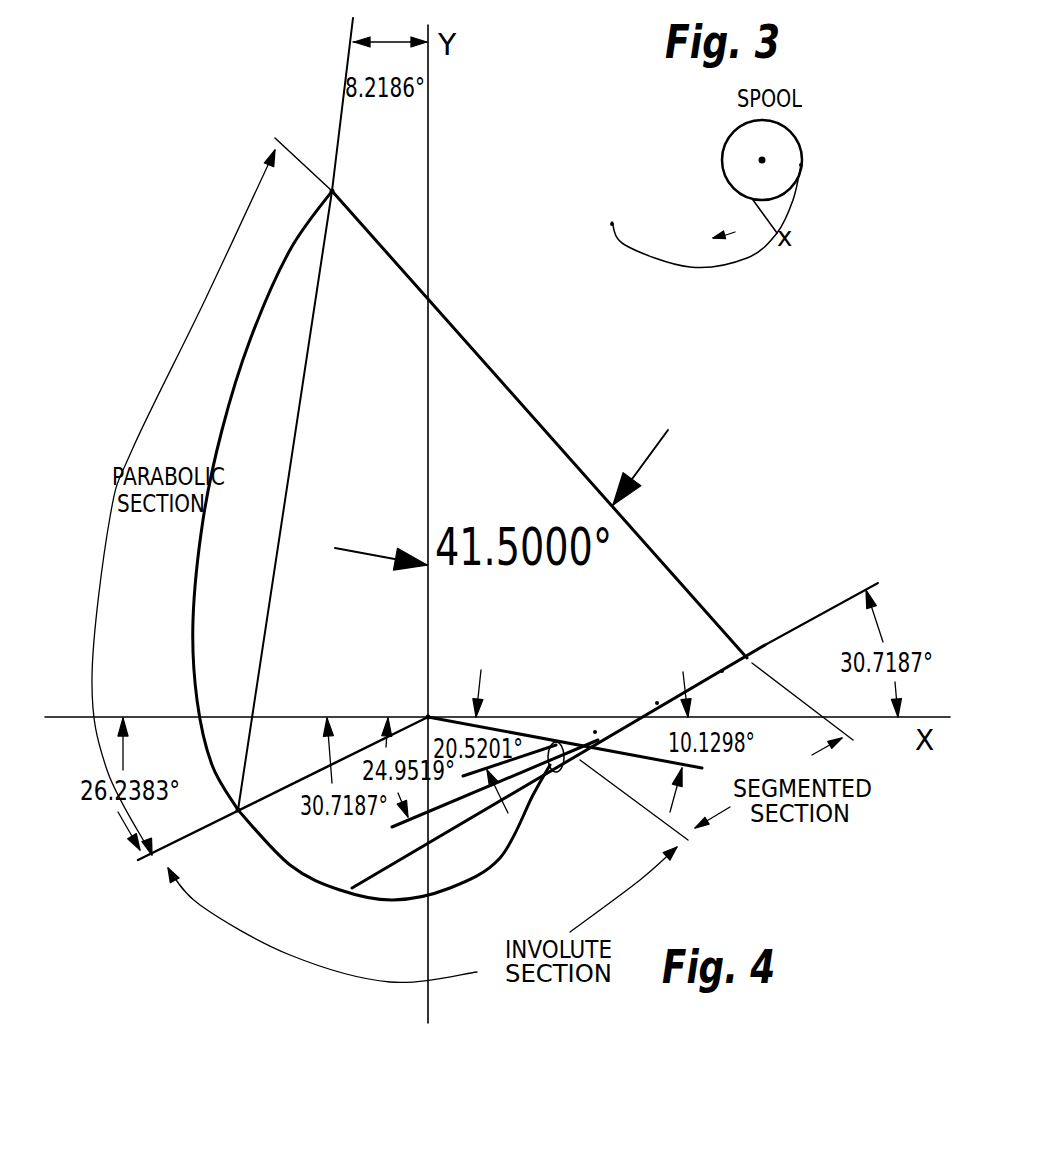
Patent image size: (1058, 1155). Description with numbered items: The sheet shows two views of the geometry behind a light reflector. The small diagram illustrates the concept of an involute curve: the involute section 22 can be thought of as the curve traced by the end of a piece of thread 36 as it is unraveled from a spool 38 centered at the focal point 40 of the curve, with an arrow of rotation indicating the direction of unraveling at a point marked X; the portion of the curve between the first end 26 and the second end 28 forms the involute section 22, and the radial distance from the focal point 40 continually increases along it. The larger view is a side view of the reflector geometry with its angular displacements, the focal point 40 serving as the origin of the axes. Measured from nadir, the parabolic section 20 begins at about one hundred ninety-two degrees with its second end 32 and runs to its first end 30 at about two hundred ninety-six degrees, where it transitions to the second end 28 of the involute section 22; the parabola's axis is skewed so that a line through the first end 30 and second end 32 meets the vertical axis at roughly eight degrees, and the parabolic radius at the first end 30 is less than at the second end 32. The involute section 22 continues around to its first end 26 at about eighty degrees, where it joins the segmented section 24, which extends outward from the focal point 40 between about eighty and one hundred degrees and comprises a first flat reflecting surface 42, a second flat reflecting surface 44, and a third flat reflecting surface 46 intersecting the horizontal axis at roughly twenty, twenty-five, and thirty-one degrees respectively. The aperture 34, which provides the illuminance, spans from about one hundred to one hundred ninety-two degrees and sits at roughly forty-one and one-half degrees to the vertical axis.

In FIG. 4, the parabolic section 20 is at (103, 455).
In FIG. 4, the involute section 22 is at (385, 985).
In FIG. 3, the involute section 22 is at (721, 267).
In FIG. 4, the segmented section 24 is at (822, 828).
In FIG. 4, the first end of the involute section 26 is at (557, 772).
In FIG. 3, the first end of the involute section 26 is at (800, 165).
In FIG. 4, the second end of the involute section 28 is at (238, 812).
In FIG. 3, the second end of the involute section 28 is at (612, 232).
In FIG. 4, the first end of the parabolic section 30 is at (238, 810).
In FIG. 4, the second end of the parabolic section 32 is at (330, 192).
In FIG. 4, the aperture 34 is at (685, 570).
In FIG. 3, the thread 36 is at (753, 200).
In FIG. 3, the spool 38 is at (793, 137).
In FIG. 4, the focal point 40 is at (431, 713).
In FIG. 3, the focal point 40 is at (762, 160).
In FIG. 4, the first flat reflecting surface 42 is at (595, 730).
In FIG. 4, the second flat reflecting surface 44 is at (657, 702).
In FIG. 4, the third flat reflecting surface 46 is at (722, 670).